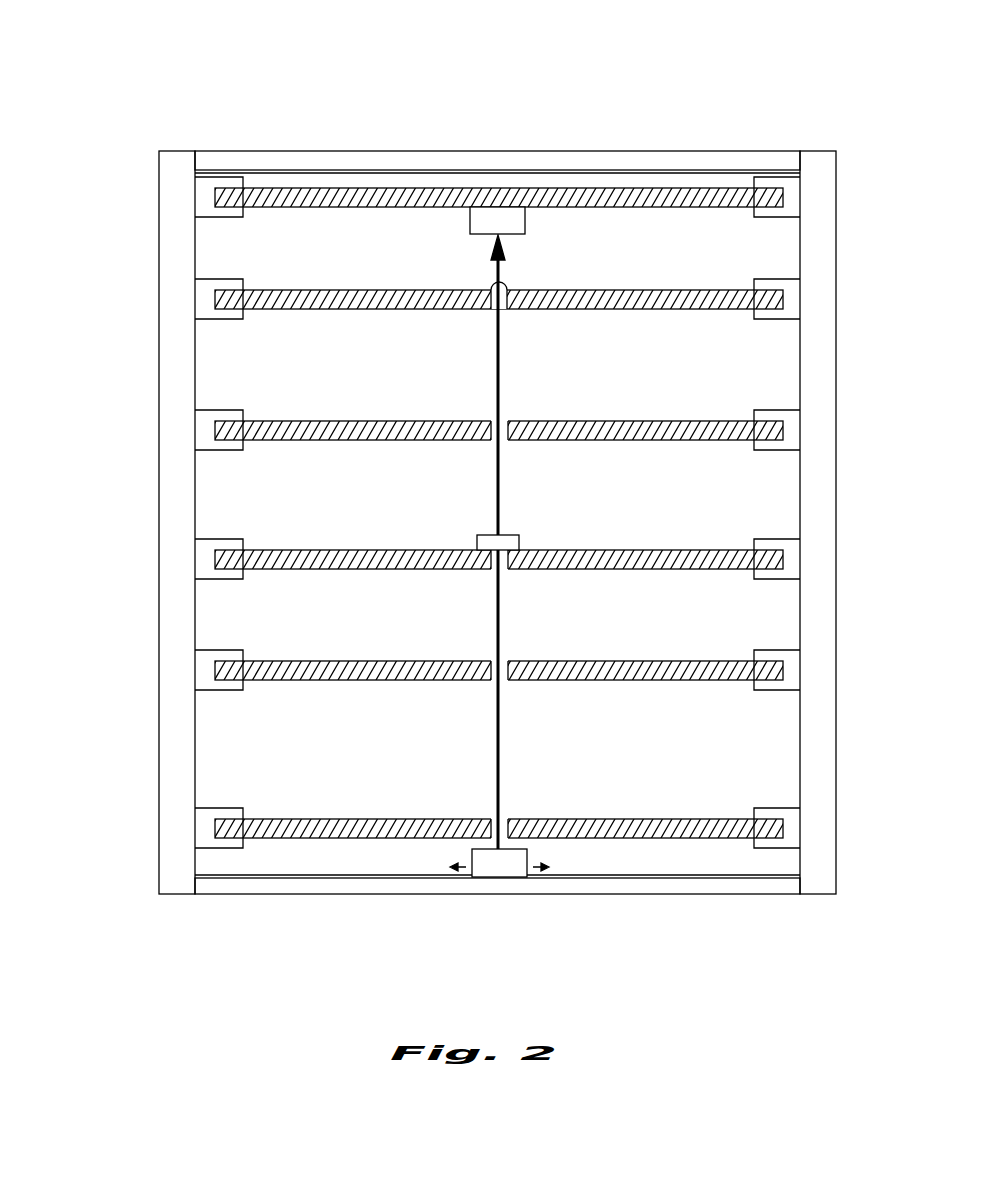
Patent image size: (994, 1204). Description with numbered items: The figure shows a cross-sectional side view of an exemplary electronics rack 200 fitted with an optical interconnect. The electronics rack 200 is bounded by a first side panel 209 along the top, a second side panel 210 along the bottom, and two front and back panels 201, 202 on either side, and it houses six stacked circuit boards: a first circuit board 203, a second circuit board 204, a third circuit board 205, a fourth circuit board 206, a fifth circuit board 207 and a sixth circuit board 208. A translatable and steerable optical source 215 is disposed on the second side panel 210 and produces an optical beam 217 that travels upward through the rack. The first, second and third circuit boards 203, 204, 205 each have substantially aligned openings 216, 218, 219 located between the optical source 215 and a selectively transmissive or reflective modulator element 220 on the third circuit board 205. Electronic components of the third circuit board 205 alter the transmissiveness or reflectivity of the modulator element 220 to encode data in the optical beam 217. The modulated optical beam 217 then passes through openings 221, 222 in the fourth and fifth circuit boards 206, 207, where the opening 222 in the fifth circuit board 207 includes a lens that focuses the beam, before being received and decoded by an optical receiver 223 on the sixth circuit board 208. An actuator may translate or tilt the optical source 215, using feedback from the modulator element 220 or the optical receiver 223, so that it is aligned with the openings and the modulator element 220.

The electronics rack 200 is at (108, 86).
The front panel 201 is at (177, 387).
The back panel 202 is at (818, 398).
The first circuit board 203 is at (612, 832).
The second circuit board 204 is at (582, 665).
The third circuit board 205 is at (596, 560).
The fourth circuit board 206 is at (583, 425).
The fifth circuit board 207 is at (645, 300).
The sixth circuit board 208 is at (660, 193).
The first side panel 209 is at (458, 163).
The second side panel 210 is at (400, 887).
The translatable and steerable optical source 215 is at (503, 862).
The opening 216 is at (504, 825).
The optical beam 217 is at (498, 732).
The opening 218 is at (493, 667).
The opening 219 is at (505, 558).
The selectively transmissive or reflective modulator element 220 is at (485, 540).
The opening 221 is at (493, 425).
The opening 222 is at (493, 300).
The optical receiver 223 is at (480, 222).